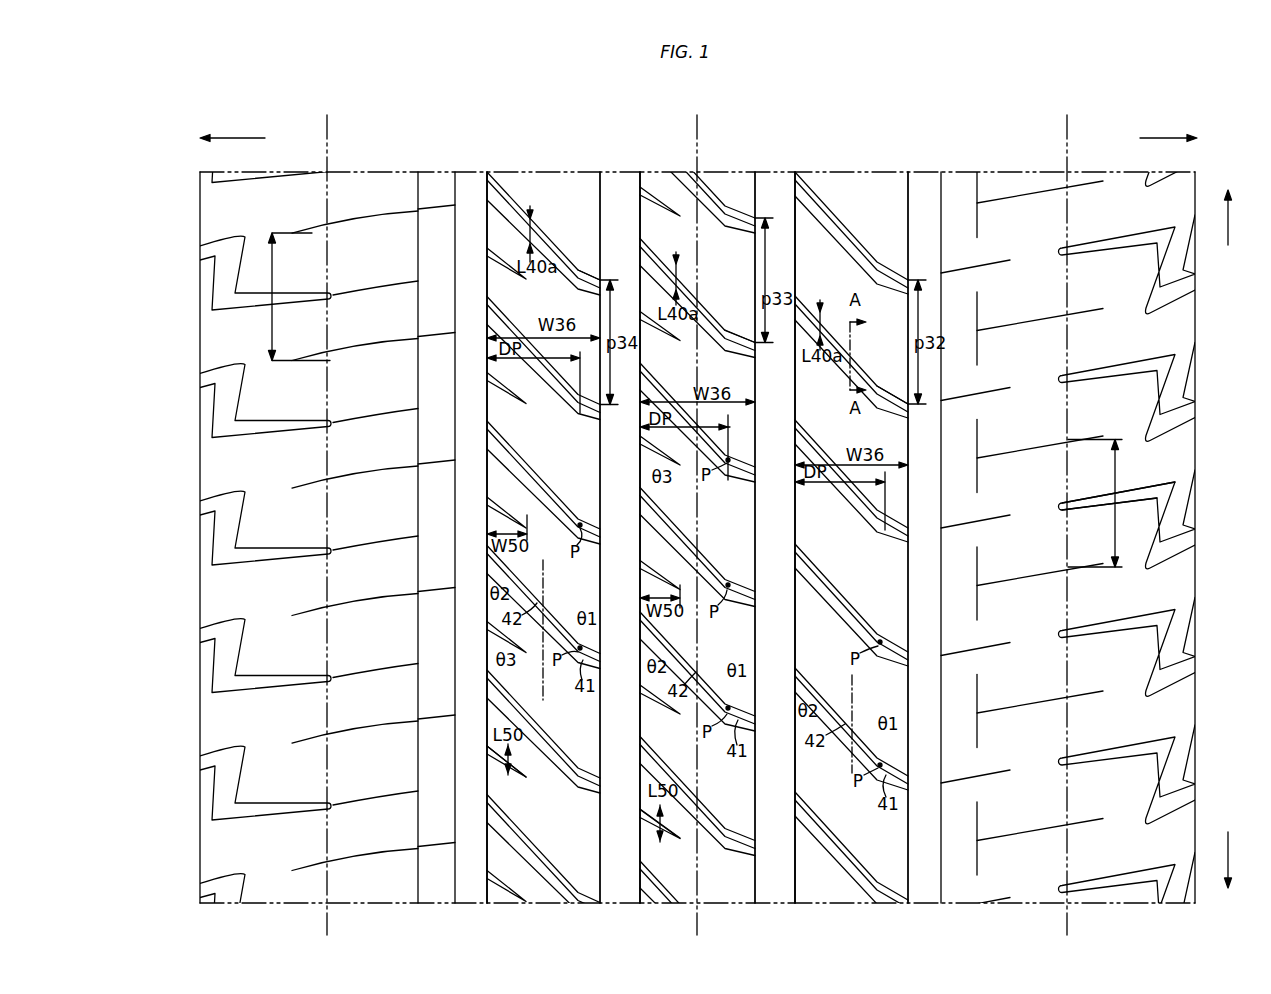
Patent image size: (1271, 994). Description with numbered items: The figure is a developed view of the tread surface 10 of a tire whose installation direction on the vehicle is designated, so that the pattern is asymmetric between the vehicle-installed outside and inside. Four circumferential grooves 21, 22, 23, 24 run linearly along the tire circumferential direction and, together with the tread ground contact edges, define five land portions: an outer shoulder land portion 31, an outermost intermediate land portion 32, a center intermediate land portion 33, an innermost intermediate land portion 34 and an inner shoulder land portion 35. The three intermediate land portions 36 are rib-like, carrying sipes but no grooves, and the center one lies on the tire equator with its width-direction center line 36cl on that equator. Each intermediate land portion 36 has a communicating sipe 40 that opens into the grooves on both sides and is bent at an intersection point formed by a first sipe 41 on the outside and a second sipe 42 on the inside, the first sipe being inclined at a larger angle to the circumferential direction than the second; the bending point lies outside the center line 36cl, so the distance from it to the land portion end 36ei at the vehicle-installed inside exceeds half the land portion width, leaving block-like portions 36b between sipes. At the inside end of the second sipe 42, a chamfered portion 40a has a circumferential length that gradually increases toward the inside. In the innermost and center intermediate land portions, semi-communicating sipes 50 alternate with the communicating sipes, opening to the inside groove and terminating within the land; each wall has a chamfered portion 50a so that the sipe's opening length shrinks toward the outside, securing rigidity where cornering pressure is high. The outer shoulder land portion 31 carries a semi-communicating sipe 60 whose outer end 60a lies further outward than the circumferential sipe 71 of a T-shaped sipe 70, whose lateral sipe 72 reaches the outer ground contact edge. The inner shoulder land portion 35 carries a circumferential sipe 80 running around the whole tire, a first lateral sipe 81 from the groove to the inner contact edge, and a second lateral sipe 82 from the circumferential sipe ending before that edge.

The tread surface 10 is at (966, 132).
The circumferential groove 21 is at (918, 180).
The circumferential groove 22 is at (770, 180).
The circumferential groove 23 is at (615, 180).
The circumferential groove 24 is at (466, 180).
The outer shoulder land portion 31 is at (1036, 185).
The outermost intermediate land portion 32 is at (844, 180).
The center intermediate land portion 33 is at (659, 180).
The innermost intermediate land portion 34 is at (536, 180).
The inner shoulder land portion 35 is at (366, 180).
The intermediate land portion 36 is at (697, 515).
The land portion end at the vehicle-installed inside of the intermediate land portio 36ei is at (493, 205).
The block-like portion of an intermediate land portion 36b is at (540, 821).
The center line in the tire width direction of the intermediate land portion 36cl is at (546, 694).
The communicating sipe 40 is at (548, 238).
The chamfered portion of the communicating sipe 40a is at (584, 266).
The first sipe of the communicating sipe 41 is at (584, 522).
The second sipe of the communicating sipe 42 is at (552, 487).
The semi-communicating sipe 50 is at (512, 506).
The chamfered portion of the semi-communicating sipe 50a is at (487, 770).
The semi-communicating sipe 60 is at (977, 256).
The outer end in the tire width direction of the semi-communicating sipe 60a is at (996, 515).
The T-shaped sipe 70 is at (1000, 318).
The circumferential sipe of the T-shaped sipe 71 is at (1092, 515).
The lateral sipe of the T-shaped sipe 72 is at (1098, 523).
The circumferential sipe 80 is at (418, 571).
The first lateral sipe 81 is at (366, 485).
The second lateral sipe 82 is at (366, 547).